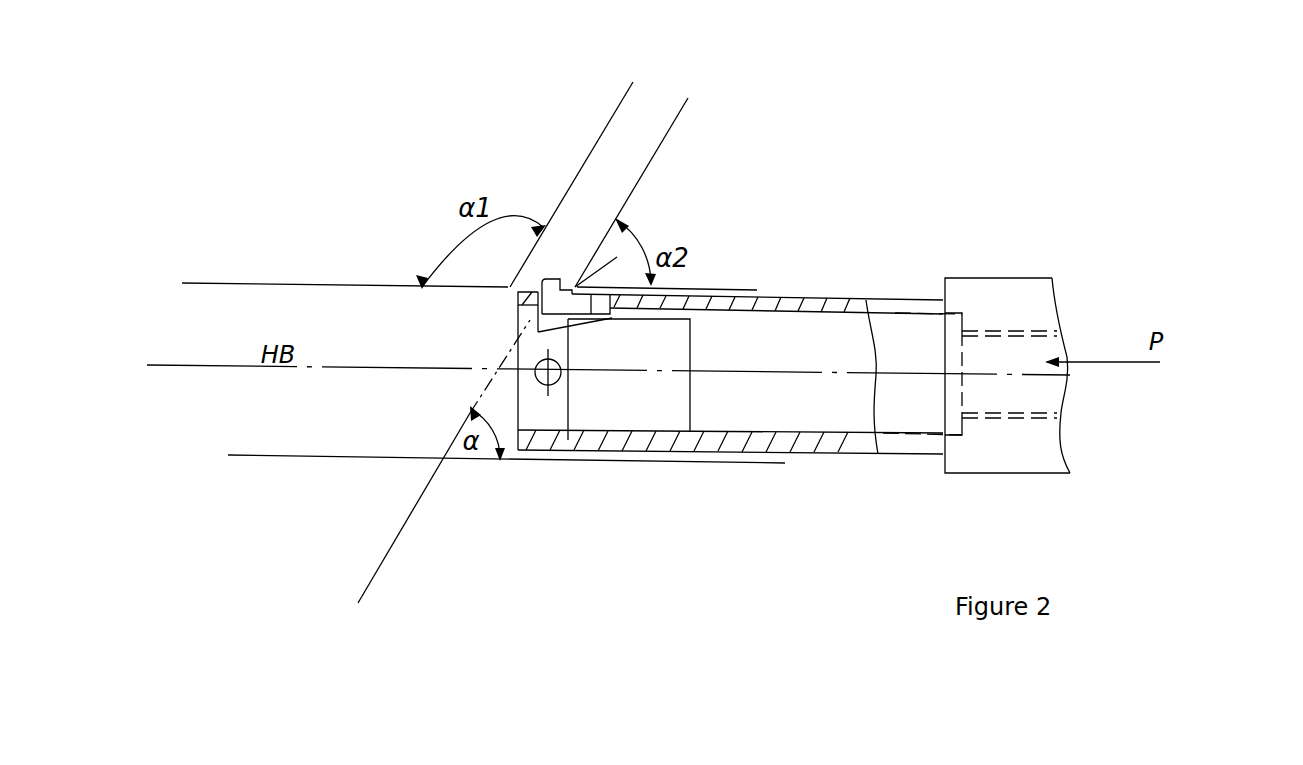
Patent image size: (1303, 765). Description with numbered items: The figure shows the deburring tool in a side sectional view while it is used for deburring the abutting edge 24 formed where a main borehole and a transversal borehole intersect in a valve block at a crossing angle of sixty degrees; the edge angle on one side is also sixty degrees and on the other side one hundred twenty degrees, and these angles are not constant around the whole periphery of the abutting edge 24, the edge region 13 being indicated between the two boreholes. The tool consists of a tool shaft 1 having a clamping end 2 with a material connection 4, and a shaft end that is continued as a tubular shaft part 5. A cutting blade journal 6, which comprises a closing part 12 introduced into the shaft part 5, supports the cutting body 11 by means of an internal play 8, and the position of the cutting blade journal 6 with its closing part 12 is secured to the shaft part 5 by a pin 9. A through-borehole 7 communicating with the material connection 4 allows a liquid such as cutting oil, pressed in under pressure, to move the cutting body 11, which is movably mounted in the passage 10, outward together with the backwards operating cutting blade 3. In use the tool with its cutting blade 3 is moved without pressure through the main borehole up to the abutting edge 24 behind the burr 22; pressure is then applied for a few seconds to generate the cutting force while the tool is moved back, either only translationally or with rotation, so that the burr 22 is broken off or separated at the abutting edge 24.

The tool shaft 1 is at (908, 312).
The clamping end 2 is at (1037, 308).
The cutting blade 3 is at (556, 290).
The material connection 4 is at (1042, 348).
The tubular shaft part 5 is at (856, 312).
The cutting blade journal 6 is at (603, 397).
The through-borehole 7 is at (834, 362).
The internal play 8 is at (568, 440).
The pin 9 is at (547, 388).
The passage 10 is at (613, 308).
The cutting body 11 is at (591, 296).
The closing part 12 is at (528, 345).
The chamfer face 13 is at (599, 184).
The burr 22 is at (655, 232).
The abutting edge 24 is at (508, 287).